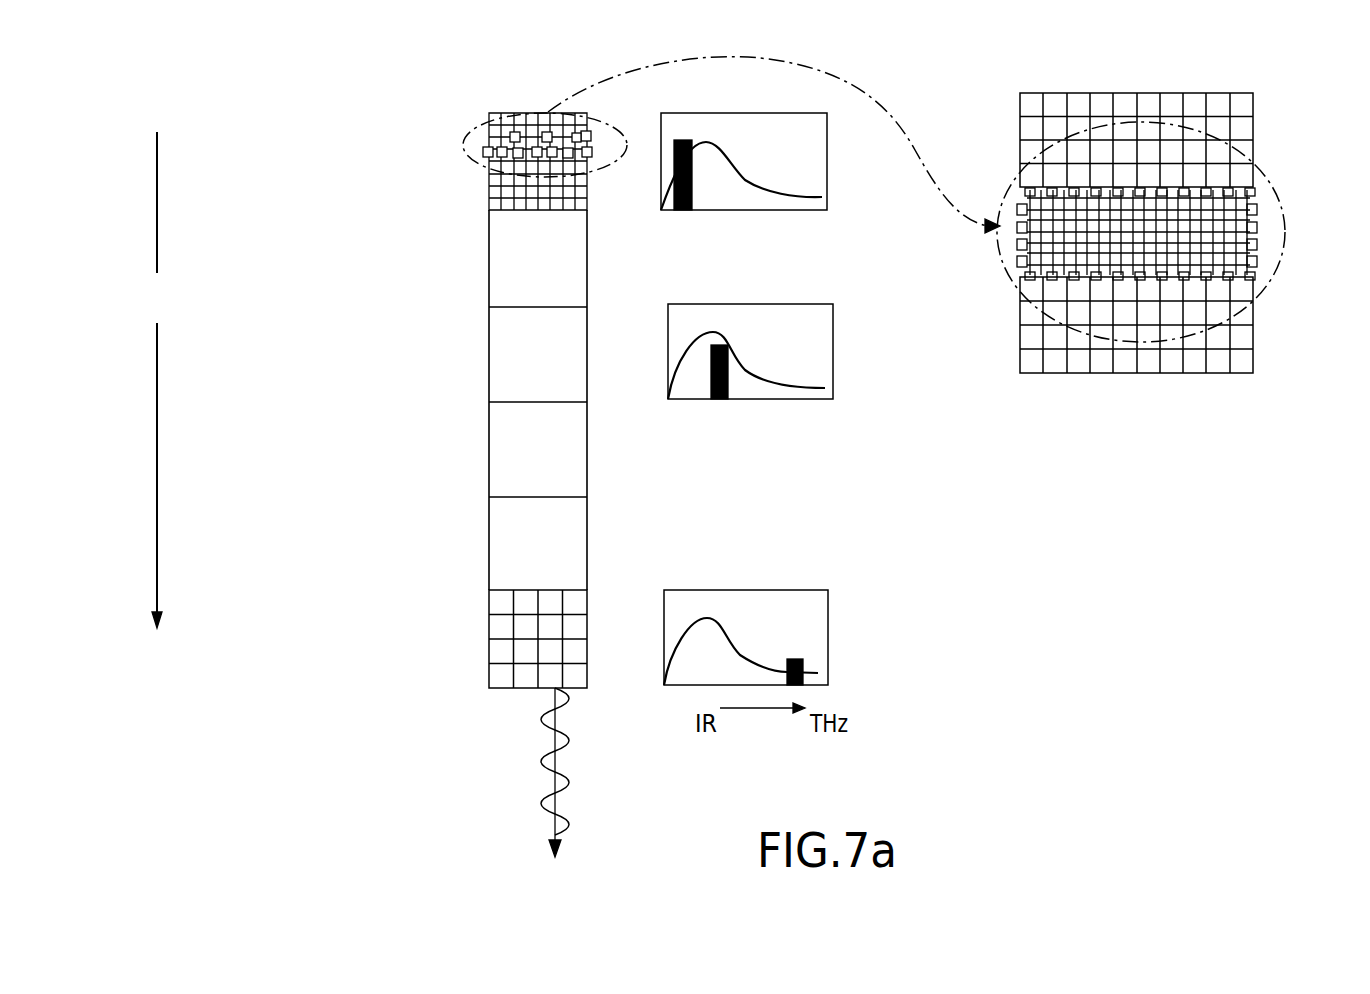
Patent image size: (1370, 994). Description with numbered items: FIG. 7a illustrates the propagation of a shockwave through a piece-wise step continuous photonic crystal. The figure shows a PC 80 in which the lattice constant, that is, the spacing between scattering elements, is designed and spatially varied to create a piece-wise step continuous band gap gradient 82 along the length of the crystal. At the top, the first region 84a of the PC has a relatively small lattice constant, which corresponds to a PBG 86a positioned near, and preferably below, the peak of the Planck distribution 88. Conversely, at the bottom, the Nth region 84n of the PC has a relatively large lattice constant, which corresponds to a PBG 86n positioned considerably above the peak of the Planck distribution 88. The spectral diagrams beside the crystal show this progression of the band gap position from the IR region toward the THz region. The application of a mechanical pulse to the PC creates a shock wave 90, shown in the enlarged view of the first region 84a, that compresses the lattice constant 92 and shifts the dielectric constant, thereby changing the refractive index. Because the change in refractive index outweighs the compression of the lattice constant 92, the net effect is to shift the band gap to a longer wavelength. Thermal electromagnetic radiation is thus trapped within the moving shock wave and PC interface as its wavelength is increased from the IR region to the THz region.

The photonic crystal 80 is at (355, 105).
The piece-wise step continuous band gap gradient 82 is at (156, 380).
The first region 84a is at (487, 177).
The Nth region 84n is at (490, 660).
The photonic band gap 86a is at (673, 158).
The photonic band gap 86n is at (810, 670).
The Planck distribution 88 is at (740, 178).
The shock wave 90 is at (500, 138).
The lattice constant 92 is at (1142, 248).